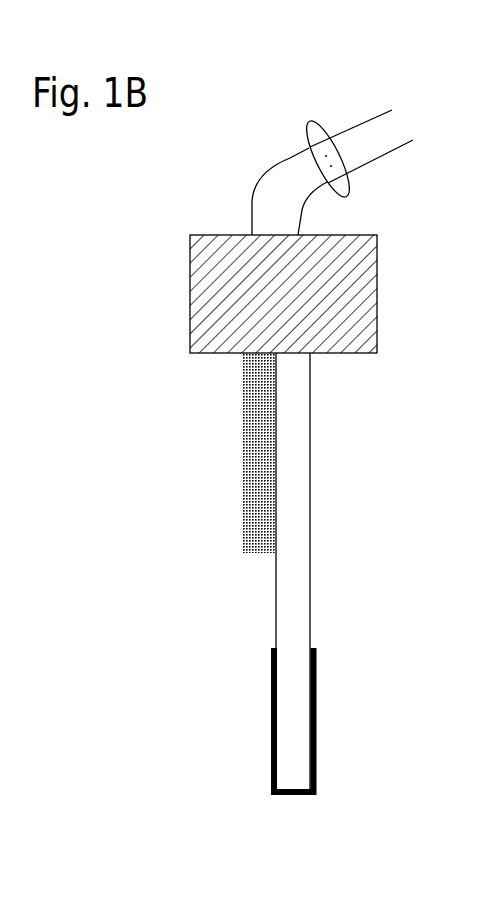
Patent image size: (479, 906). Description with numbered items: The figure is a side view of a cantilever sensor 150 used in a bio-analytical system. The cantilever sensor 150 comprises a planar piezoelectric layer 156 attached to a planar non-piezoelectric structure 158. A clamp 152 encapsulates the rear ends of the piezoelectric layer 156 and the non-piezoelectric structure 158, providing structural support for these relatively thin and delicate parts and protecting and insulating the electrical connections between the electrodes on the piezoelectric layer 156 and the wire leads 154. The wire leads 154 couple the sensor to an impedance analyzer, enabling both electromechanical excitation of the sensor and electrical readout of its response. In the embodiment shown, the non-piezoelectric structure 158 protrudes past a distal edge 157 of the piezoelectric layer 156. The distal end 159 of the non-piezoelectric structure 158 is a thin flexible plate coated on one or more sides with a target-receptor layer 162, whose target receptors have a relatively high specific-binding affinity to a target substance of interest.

The cantilever sensor 150 is at (155, 182).
The clamp 152 is at (377, 253).
The wire leads 154 is at (308, 120).
The planar piezoelectric layer 156 is at (255, 503).
The distal edge of piezoelectric layer 157 is at (259, 559).
The planar non-piezoelectric structure 158 is at (293, 434).
The distal end of non-piezoelectric structure 159 is at (292, 773).
The target-receptor layer 162 is at (317, 760).